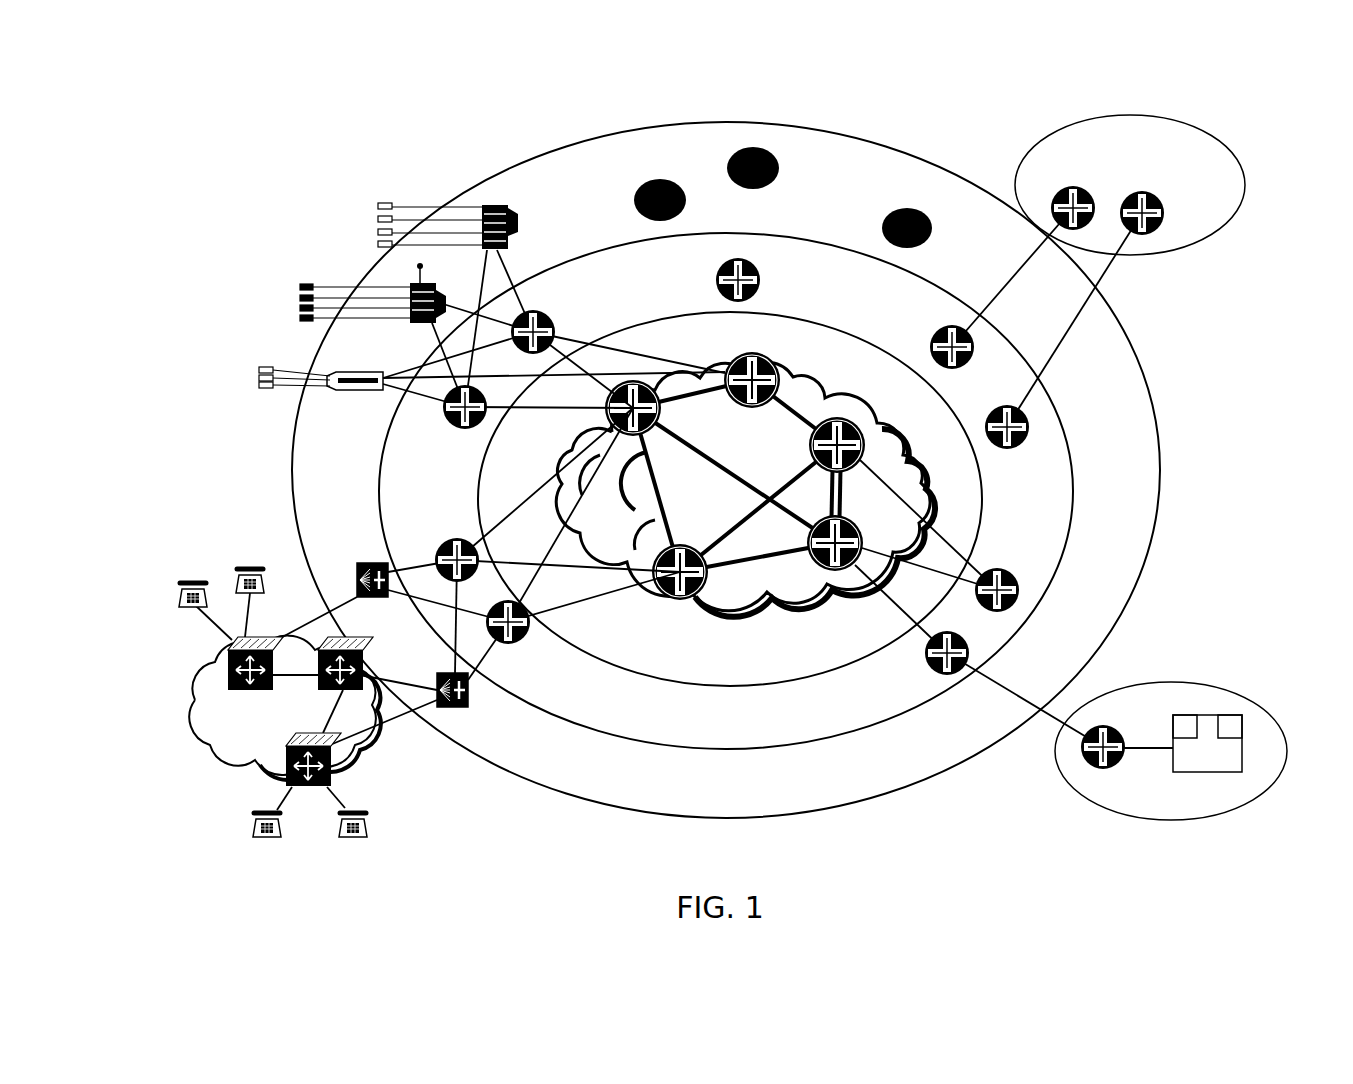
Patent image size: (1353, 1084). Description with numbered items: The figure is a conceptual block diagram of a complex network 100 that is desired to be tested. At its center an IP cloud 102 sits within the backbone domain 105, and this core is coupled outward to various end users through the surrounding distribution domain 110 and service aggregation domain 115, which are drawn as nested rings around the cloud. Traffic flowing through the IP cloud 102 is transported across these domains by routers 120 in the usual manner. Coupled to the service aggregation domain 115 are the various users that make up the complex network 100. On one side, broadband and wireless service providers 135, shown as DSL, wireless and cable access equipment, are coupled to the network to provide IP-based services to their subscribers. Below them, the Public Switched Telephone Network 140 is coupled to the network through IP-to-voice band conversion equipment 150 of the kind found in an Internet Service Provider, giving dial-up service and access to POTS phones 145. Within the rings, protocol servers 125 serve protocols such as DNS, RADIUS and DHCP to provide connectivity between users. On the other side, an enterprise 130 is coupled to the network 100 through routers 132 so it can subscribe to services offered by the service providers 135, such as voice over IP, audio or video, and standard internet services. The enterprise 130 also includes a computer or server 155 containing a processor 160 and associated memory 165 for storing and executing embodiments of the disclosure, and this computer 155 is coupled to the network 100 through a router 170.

The complex network 100 is at (228, 106).
The IP cloud 102 is at (935, 492).
The backbone domain 105 is at (730, 499).
The distribution domain 110 is at (726, 491).
The service aggregation domain 115 is at (726, 470).
The routers 120 is at (1020, 590).
The protocol servers 125 is at (892, 210).
The enterprise 130 is at (1040, 133).
The routers 132 is at (1145, 236).
The broadband and wireless service providers 135 is at (350, 222).
The Public Switched Telephone Network 140 is at (193, 743).
The POTS phones 145 is at (368, 830).
The remote access server 150 is at (455, 708).
The computer or server 155 is at (1207, 772).
The processor 160 is at (1185, 715).
The memory 165 is at (1230, 715).
The router 170 is at (1081, 745).